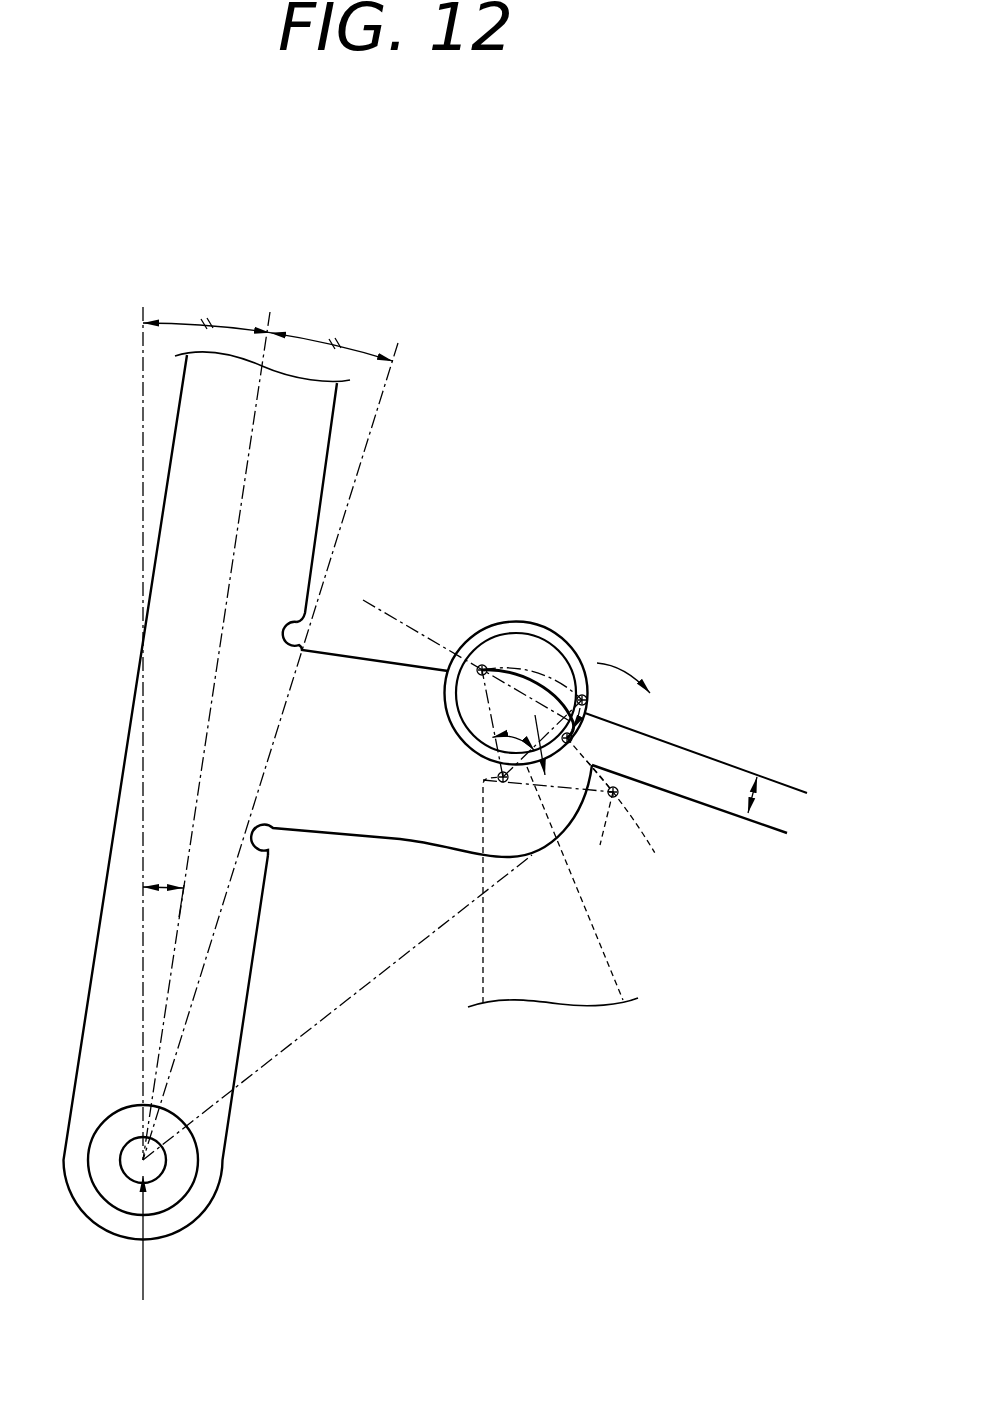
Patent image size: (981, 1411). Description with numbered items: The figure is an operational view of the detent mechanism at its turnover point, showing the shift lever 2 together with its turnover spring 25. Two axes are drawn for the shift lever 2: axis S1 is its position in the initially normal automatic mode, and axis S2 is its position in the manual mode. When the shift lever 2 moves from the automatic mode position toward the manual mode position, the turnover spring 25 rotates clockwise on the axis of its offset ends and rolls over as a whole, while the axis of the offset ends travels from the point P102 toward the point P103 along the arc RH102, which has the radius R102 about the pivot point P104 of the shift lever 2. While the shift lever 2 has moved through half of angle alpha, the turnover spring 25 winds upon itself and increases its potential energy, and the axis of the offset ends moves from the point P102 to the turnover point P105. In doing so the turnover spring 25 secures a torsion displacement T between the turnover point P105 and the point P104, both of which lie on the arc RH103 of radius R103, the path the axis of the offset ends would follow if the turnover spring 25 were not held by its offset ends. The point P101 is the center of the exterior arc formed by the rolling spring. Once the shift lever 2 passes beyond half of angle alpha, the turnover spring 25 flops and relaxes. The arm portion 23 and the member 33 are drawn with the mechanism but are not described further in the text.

The shift lever 2 is at (133, 752).
The arm portion 23 is at (345, 828).
The turnover spring 25 is at (447, 738).
The member 33 is at (610, 968).
The axis of the shift lever in the automatic mode S1 is at (196, 708).
The axis of the shift lever in the manual mode S2 is at (283, 730).
The torsion displacement T is at (696, 773).
The point P101 is at (508, 792).
The point P102 is at (486, 664).
The point P103 is at (623, 798).
The pivot point of the shift lever P104 is at (589, 692).
The turnover point P105 is at (578, 734).
The radius R102 is at (367, 983).
The radius R103 is at (490, 695).
The arc RH102 is at (642, 830).
The arc RH103 is at (535, 673).